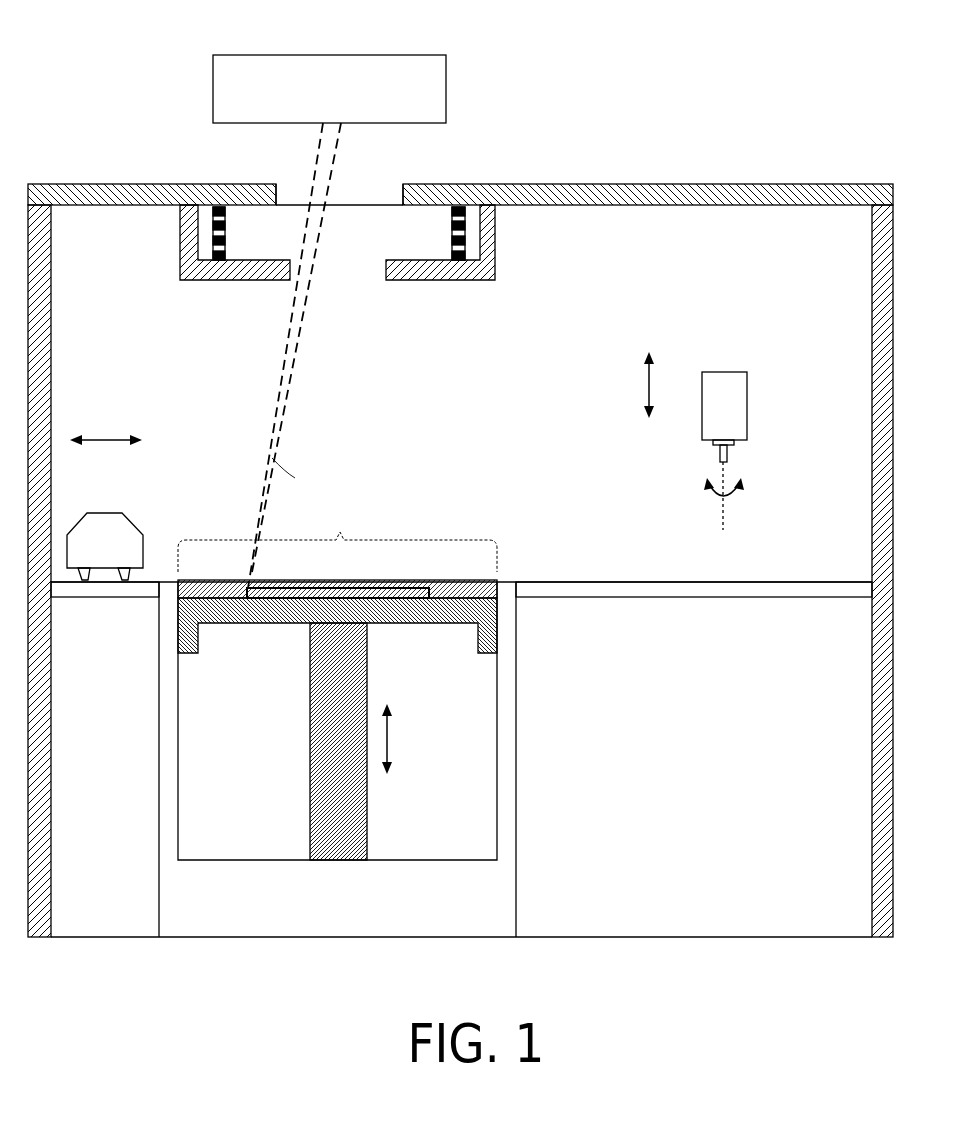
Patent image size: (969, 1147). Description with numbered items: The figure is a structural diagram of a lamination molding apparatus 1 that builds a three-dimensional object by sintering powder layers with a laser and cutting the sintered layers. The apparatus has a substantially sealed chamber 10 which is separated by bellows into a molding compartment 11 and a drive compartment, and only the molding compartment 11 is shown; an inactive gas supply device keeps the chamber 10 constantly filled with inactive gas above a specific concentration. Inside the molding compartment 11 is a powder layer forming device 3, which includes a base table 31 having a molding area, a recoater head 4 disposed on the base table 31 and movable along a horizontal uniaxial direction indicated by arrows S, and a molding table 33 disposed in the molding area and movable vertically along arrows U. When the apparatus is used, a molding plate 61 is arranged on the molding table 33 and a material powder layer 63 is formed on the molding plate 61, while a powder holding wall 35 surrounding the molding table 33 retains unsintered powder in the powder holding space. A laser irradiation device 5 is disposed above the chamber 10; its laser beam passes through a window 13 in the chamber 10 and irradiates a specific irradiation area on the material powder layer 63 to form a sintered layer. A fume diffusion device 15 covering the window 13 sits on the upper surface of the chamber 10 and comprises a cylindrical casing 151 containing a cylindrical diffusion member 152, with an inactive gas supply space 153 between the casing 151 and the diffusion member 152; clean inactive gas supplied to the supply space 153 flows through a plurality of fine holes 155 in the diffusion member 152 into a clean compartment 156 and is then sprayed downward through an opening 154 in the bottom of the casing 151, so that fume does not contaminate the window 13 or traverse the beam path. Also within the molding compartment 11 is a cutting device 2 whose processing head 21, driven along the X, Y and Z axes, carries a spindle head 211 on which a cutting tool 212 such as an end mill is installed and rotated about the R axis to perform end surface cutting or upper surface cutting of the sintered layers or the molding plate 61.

The lamination molding apparatus 1 is at (92, 113).
The chamber 10 is at (110, 190).
The molding compartment 11 is at (588, 422).
The window 13 is at (290, 186).
The laser irradiation device 5 is at (402, 68).
The fume diffusion device 15 is at (365, 295).
The casing 151 is at (245, 278).
The diffusion member 152 is at (452, 220).
The inactive gas supply space 153 is at (480, 242).
The opening 154 is at (358, 270).
The fine holes 155 is at (228, 214).
The clean compartment 156 is at (340, 252).
The cutting device 2 is at (741, 430).
The processing head 21 is at (738, 422).
The spindle head 211 is at (718, 450).
The cutting tool 212 is at (730, 458).
The recoater head 4 is at (121, 527).
The powder layer forming device 3 is at (337, 655).
The base table 31 is at (137, 592).
The molding table 33 is at (205, 627).
The powder holding wall 35 is at (172, 700).
The molding plate 61 is at (400, 600).
The material powder layer 63 is at (385, 583).